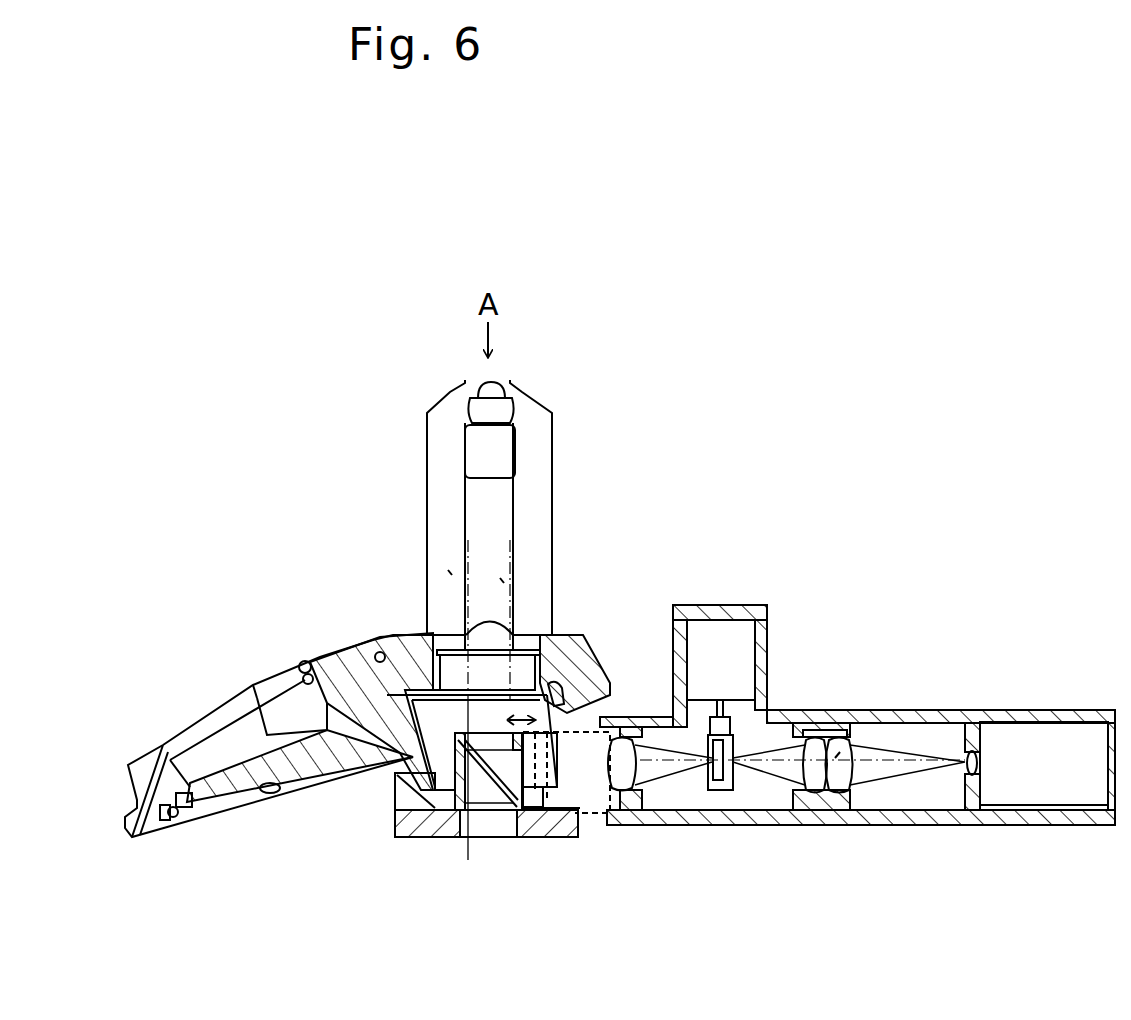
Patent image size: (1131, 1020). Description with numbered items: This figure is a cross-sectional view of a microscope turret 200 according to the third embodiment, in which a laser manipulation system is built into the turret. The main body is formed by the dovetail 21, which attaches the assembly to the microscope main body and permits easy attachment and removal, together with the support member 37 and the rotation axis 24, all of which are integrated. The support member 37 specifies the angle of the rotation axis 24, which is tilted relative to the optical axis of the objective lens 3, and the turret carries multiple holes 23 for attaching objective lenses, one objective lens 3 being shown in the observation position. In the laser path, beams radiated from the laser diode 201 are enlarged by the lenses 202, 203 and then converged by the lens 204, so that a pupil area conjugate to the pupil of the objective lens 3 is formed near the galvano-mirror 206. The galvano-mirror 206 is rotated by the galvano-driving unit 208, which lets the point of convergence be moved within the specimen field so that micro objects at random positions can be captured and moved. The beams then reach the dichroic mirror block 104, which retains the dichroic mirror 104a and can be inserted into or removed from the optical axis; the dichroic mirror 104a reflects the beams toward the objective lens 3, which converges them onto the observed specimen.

The objective lens 3 is at (537, 497).
The turret 200 is at (678, 472).
The galvano-driving unit 208 is at (731, 630).
The rotation axis 24 is at (356, 707).
The support member 37 is at (293, 730).
The holes 23 is at (200, 722).
The dovetail 21 is at (395, 828).
The dichroic mirror block 104 is at (470, 837).
The dichroic mirror 104a is at (495, 810).
The galvano-mirror 206 is at (720, 790).
The lens 204 is at (800, 747).
The lens 203 is at (860, 747).
The lens 202 is at (962, 778).
The laser diode 201 is at (1030, 722).